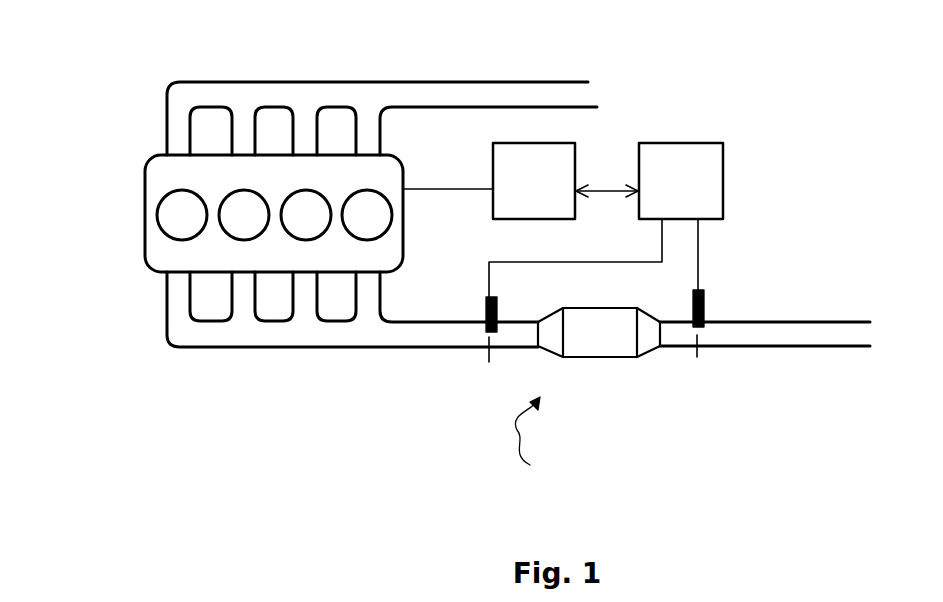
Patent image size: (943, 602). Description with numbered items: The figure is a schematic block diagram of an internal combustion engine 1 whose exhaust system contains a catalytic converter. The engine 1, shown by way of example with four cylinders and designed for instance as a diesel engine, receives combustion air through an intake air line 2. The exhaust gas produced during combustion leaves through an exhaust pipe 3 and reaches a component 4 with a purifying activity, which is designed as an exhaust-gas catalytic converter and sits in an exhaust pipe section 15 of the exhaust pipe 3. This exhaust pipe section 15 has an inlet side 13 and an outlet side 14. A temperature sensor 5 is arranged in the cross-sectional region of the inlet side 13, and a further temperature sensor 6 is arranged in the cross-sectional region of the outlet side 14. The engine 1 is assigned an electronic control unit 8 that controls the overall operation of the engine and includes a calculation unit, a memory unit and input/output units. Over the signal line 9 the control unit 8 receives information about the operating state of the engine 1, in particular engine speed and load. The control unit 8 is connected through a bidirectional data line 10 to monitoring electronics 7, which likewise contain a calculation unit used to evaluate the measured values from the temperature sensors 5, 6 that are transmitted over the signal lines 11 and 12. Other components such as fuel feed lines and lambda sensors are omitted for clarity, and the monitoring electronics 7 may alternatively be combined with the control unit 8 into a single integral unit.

The internal combustion engine 1 is at (150, 192).
The intake air line 2 is at (433, 92).
The exhaust pipe 3 is at (395, 337).
The component with a purifying activity 4 is at (592, 346).
The temperature sensor 5 is at (485, 293).
The further temperature sensor 6 is at (707, 310).
The monitoring electronics 7 is at (681, 181).
The electronic control unit 8 is at (534, 181).
The signal line 9 is at (458, 183).
The bidirectional data line 10 is at (593, 183).
The signal line 11 is at (517, 264).
The signal line 12 is at (700, 257).
The inlet side 13 is at (487, 358).
The outlet side 14 is at (698, 350).
The exhaust pipe section 15 is at (511, 450).